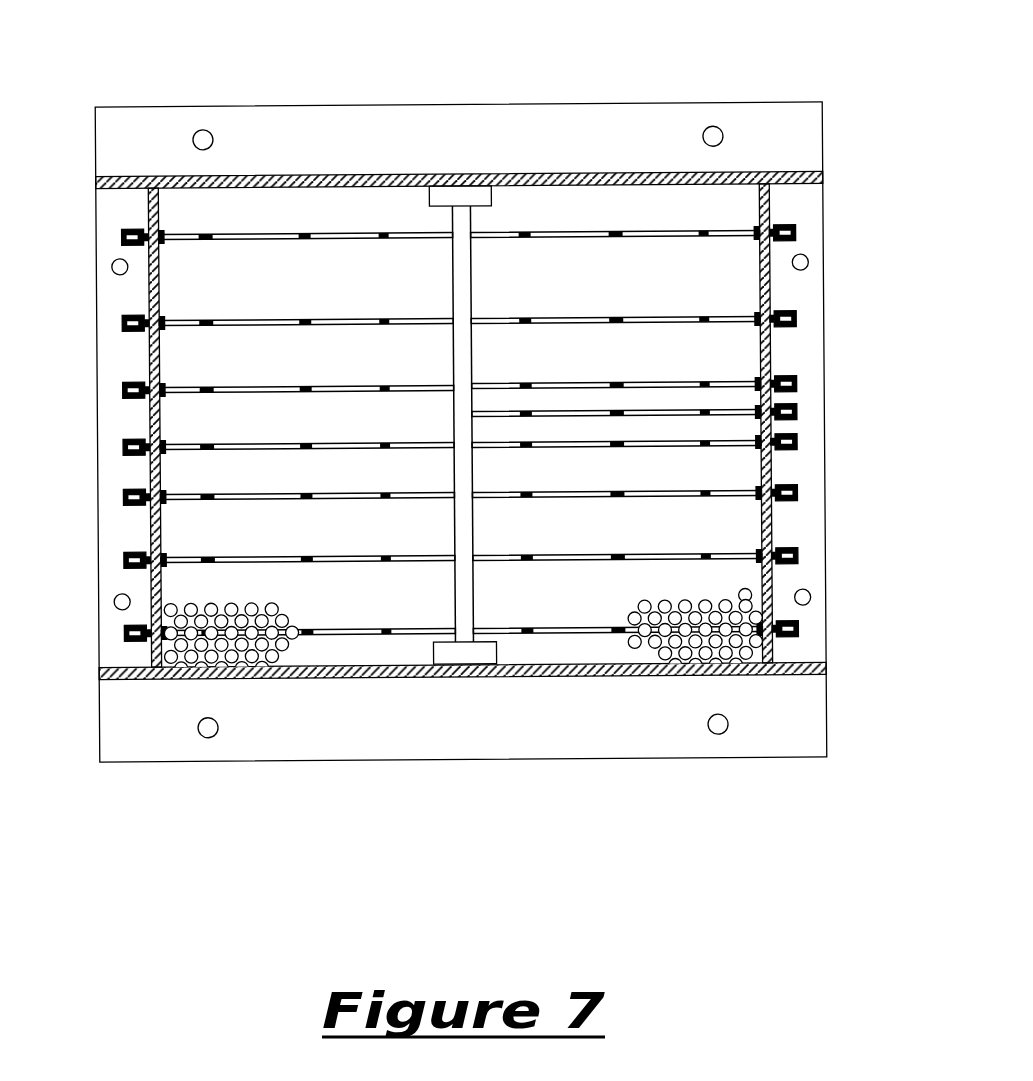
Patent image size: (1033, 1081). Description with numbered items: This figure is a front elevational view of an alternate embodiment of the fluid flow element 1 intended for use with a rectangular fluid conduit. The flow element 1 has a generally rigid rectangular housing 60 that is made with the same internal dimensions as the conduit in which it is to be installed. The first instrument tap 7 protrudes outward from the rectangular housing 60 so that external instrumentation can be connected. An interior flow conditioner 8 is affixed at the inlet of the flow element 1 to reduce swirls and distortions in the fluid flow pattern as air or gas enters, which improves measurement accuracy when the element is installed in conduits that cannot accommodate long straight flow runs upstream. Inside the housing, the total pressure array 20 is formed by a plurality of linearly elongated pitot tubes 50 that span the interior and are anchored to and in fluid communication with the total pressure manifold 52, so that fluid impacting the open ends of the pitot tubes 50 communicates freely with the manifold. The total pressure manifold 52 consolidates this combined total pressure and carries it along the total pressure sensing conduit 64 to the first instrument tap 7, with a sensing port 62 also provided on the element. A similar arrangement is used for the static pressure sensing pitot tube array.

The fluid flow element 1 is at (645, 100).
The first instrument tap 7 is at (800, 442).
The interior flow conditioner 8 is at (168, 680).
The total pressure array 20 is at (340, 317).
The pitot tubes 50 is at (333, 635).
The total pressure manifold 52 is at (470, 597).
The rectangular housing 60 is at (777, 173).
The sensing port 62 is at (293, 390).
The total pressure sensing conduit 64 is at (672, 410).